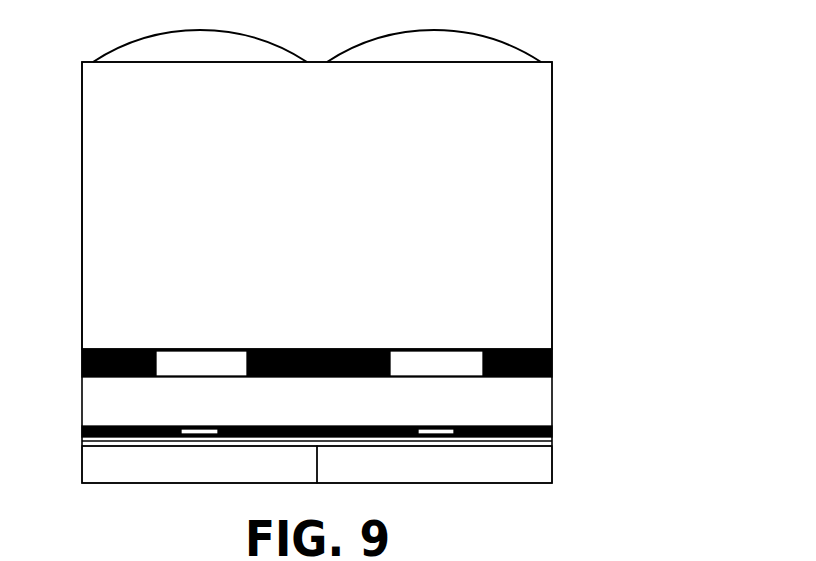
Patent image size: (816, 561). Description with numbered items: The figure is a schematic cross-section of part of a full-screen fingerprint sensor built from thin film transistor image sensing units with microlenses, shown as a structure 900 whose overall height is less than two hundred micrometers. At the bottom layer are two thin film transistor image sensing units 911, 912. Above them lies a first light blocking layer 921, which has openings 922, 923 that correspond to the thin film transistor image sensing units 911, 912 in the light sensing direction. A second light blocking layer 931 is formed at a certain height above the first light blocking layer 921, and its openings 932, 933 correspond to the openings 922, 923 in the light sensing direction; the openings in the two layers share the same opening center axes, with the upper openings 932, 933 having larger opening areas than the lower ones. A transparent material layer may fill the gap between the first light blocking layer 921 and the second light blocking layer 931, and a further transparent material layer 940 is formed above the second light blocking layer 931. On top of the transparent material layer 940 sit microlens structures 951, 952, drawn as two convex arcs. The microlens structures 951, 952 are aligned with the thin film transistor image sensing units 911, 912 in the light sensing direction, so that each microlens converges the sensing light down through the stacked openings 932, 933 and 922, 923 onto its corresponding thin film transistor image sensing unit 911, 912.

The structure 900 is at (714, 510).
The thin film transistor image sensing unit 911 is at (543, 465).
The thin film transistor image sensing unit 912 is at (88, 464).
The first light blocking layer 921 is at (552, 431).
The opening 922 is at (436, 426).
The opening 923 is at (201, 426).
The second light blocking layer 931 is at (552, 363).
The opening 932 is at (436, 348).
The opening 933 is at (201, 348).
The transparent material layer 940 is at (535, 192).
The microlens structure 951 is at (495, 49).
The microlens structure 952 is at (150, 49).